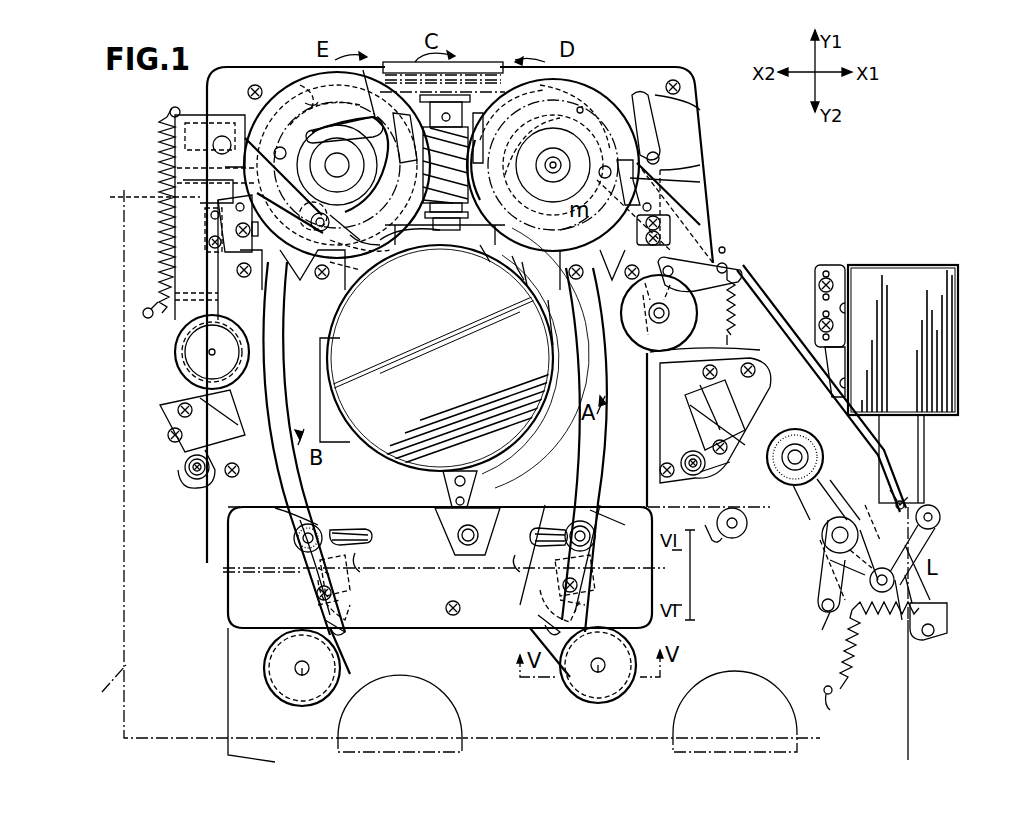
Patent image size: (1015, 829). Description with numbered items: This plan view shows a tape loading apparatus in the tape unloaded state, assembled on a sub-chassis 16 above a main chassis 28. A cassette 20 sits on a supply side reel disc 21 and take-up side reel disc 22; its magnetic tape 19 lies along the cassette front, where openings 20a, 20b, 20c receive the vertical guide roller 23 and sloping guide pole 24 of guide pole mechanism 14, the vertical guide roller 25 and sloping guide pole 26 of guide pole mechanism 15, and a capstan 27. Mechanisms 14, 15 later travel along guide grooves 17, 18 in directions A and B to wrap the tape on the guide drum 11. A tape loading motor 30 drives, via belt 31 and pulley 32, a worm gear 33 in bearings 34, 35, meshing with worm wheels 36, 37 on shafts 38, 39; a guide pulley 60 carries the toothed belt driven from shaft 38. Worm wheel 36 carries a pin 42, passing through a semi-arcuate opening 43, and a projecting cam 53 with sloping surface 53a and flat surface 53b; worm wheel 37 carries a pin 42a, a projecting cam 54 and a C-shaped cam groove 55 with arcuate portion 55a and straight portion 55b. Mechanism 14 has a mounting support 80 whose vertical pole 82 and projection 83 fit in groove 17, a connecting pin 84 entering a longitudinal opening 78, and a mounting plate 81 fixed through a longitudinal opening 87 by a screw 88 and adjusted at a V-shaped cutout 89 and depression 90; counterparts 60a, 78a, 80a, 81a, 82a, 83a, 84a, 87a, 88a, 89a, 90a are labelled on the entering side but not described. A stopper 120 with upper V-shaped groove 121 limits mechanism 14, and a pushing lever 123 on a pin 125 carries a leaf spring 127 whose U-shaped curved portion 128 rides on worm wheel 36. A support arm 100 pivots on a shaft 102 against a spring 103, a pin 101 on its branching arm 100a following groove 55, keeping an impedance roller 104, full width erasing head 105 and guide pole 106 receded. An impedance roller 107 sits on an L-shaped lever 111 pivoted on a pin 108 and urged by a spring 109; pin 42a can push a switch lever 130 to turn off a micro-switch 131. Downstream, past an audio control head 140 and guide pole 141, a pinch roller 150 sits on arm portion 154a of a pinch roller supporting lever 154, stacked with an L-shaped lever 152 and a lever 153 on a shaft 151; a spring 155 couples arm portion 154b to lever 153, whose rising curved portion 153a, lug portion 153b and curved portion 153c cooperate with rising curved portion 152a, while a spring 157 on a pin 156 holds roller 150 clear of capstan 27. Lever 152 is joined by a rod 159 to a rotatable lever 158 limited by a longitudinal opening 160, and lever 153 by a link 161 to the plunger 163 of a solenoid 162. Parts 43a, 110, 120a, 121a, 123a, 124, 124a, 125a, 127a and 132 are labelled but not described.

The rotary head drum 11 is at (368, 442).
The pinch roller arm 14 is at (610, 550).
The pinch roller arm 15 is at (350, 592).
The sub chassis 16 is at (225, 603).
The tape guide arm 17 is at (602, 447).
The tape guide arm 18 is at (277, 383).
The chassis portion 19 is at (255, 530).
The chassis 20 is at (912, 682).
The chassis portion 20a is at (502, 567).
The chassis portion 20b is at (365, 560).
The chassis portion 20c is at (705, 545).
The guide roller 21 is at (460, 715).
The guide roller 22 is at (755, 675).
The pivot shaft 23 is at (595, 528).
The bracket 24 is at (530, 520).
The pivot 25 is at (300, 520).
The pivot shaft 26 is at (365, 520).
The guide 27 is at (733, 538).
The cassette position 28 is at (452, 464).
The tape 30 is at (508, 272).
The motor shaft 31 is at (485, 110).
The pulley 32 is at (398, 62).
The worm 33 is at (447, 235).
The shaft 34 is at (448, 100).
The bearing 35 is at (440, 232).
The reel base 36 is at (625, 78).
The reel base 37 is at (265, 80).
The reel shaft 38 is at (553, 172).
The lever 39 is at (337, 175).
The pin 42 is at (606, 164).
The pin 42a is at (282, 147).
The arm 43 is at (582, 106).
The arm 43a is at (300, 85).
The gear 53 is at (488, 262).
The gear portion 53a is at (537, 138).
The gear portion 53b is at (521, 112).
The gear 54 is at (405, 240).
The gear 55 is at (385, 245).
The gear portion 55a is at (375, 250).
The slot 55b is at (347, 124).
The roller 60 is at (540, 180).
The roller 60a is at (290, 700).
The tape path line 78 is at (450, 572).
The tape path line 78a is at (222, 572).
The lever 80 is at (538, 618).
The lever 80a is at (320, 625).
The pinch roller 81 is at (525, 538).
The pinch roller 81a is at (372, 540).
The arm 82 is at (560, 515).
The arm 82a is at (335, 515).
The spring 83 is at (540, 595).
The spring 83a is at (352, 612).
The plate 84 is at (555, 578).
The plate 84a is at (352, 578).
The pin 87 is at (590, 603).
The pin 87a is at (320, 600).
The screw 88 is at (590, 582).
The screw 88a is at (318, 578).
The roller shaft 89 is at (599, 654).
The roller shaft 89a is at (312, 632).
The guide arm 90 is at (535, 632).
The guide arm 90a is at (352, 655).
The spring anchor 100 is at (175, 300).
The lever portion 100a is at (180, 190).
The lever 101 is at (355, 245).
The pin 102 is at (200, 120).
The spring 103 is at (160, 167).
The roller 104 is at (178, 358).
The bracket 105 is at (238, 438).
The screw 106 is at (195, 480).
The bracket 107 is at (745, 350).
The lever 108 is at (728, 262).
The spring 109 is at (736, 330).
The pin 110 is at (740, 273).
The lever portion 111 is at (712, 240).
The tape 120 is at (522, 270).
The tape 120a is at (345, 272).
The tape guide 121 is at (540, 295).
The tape guide 121a is at (335, 312).
The roller 123 is at (659, 313).
The bracket 123a is at (262, 270).
The terminal block 124 is at (700, 212).
The lever 124a is at (223, 223).
The arm 125 is at (620, 185).
The bracket 125a is at (212, 252).
The lever 127 is at (700, 187).
The lever 127a is at (227, 213).
The lever 128 is at (660, 130).
The arm 130 is at (325, 101).
The pivot 131 is at (222, 134).
The line 132 is at (139, 195).
The plate 140 is at (660, 455).
The screw 141 is at (712, 475).
The roller 150 is at (795, 429).
The lever 151 is at (822, 540).
The pivot 152 is at (940, 522).
The lever portion 152a is at (830, 585).
The lever 153 is at (940, 590).
The pin 153a is at (818, 600).
The lever portion 153b is at (870, 505).
The lever portion 153c is at (850, 555).
The arm 154 is at (800, 500).
The arm 154a is at (830, 478).
The arm end 154b is at (826, 618).
The spring 155 is at (875, 615).
The spring anchor 156 is at (844, 705).
The spring 157 is at (848, 668).
The lever 158 is at (700, 165).
The rod 159 is at (762, 300).
The arm 160 is at (695, 102).
The link 161 is at (925, 552).
The solenoid 162 is at (958, 355).
The plunger 163 is at (926, 441).